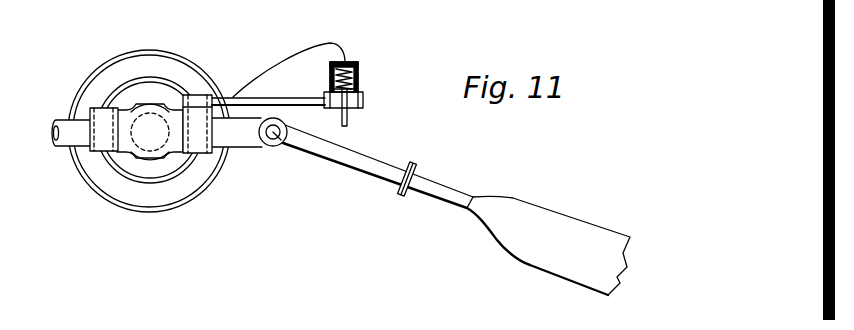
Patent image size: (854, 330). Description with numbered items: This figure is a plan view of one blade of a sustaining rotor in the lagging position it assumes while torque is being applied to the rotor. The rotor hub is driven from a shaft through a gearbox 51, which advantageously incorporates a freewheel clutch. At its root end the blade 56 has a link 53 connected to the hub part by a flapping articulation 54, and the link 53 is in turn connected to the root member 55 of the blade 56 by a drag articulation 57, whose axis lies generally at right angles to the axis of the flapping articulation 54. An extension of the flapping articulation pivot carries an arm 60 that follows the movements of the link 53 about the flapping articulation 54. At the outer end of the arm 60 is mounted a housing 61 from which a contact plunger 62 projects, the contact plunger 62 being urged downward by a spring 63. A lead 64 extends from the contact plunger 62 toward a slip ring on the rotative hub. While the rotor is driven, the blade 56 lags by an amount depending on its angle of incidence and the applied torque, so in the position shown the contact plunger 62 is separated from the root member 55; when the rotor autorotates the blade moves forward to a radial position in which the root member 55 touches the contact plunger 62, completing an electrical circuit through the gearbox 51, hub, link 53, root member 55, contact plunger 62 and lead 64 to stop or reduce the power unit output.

The gearbox 51 is at (140, 198).
The link 53 is at (65, 127).
The flapping articulation 54 is at (103, 143).
The root member 55 is at (365, 163).
The blade 56 is at (513, 233).
The drag articulation 57 is at (287, 143).
The arm 60 is at (253, 100).
The housing 61 is at (359, 70).
The contact plunger 62 is at (348, 118).
The spring 63 is at (358, 80).
The lead 64 is at (338, 44).